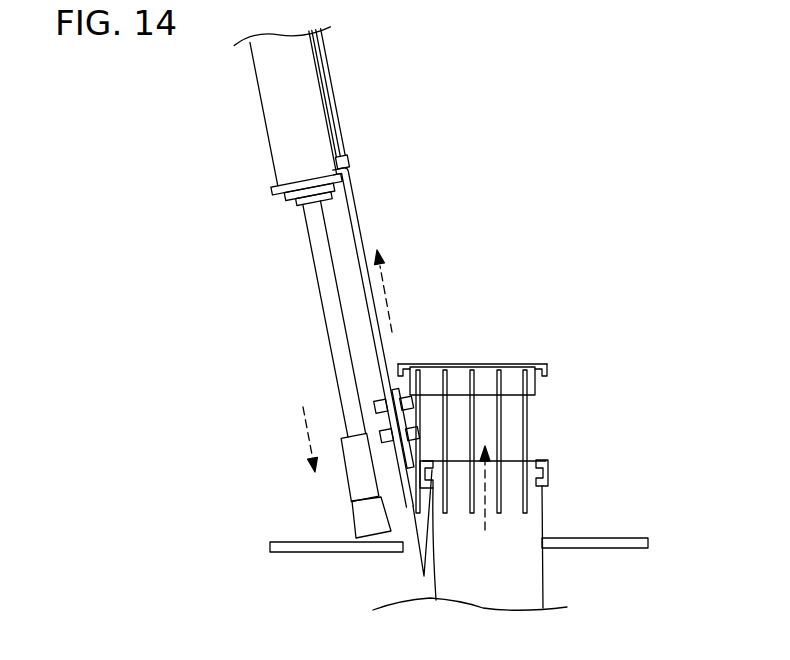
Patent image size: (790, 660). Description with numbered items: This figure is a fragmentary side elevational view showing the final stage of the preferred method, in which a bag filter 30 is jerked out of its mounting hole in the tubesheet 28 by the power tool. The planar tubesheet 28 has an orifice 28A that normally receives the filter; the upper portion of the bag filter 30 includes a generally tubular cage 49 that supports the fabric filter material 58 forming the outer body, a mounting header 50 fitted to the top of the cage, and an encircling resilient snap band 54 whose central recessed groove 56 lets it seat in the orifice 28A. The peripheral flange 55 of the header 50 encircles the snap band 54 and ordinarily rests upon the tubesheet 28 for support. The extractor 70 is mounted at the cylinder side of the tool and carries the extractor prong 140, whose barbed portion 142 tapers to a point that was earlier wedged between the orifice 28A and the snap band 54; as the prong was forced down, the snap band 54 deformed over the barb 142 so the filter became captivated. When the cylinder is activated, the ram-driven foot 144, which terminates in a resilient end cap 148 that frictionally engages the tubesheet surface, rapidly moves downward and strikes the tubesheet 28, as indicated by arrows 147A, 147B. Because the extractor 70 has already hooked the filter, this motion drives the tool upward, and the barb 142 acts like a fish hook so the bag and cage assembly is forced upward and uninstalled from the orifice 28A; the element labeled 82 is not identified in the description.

The tubesheet 28 is at (645, 538).
The tubesheet orifice 28A is at (406, 563).
The bag filter 30 is at (517, 393).
The tubular cage 49 is at (502, 437).
The mounting header 50 is at (457, 363).
The snap band 54 is at (548, 485).
The peripheral flange 55 is at (538, 363).
The recessed groove 56 is at (548, 473).
The fabric filter material 58 is at (543, 552).
The extractor 70 is at (402, 272).
The tube 82 is at (313, 143).
The extractor prong 140 is at (378, 484).
The barbed portion 142 is at (433, 517).
The ram-driven foot 144 is at (280, 300).
The arrow 147A is at (312, 450).
The arrow 147B is at (392, 317).
The resilient end cap 148 is at (370, 522).